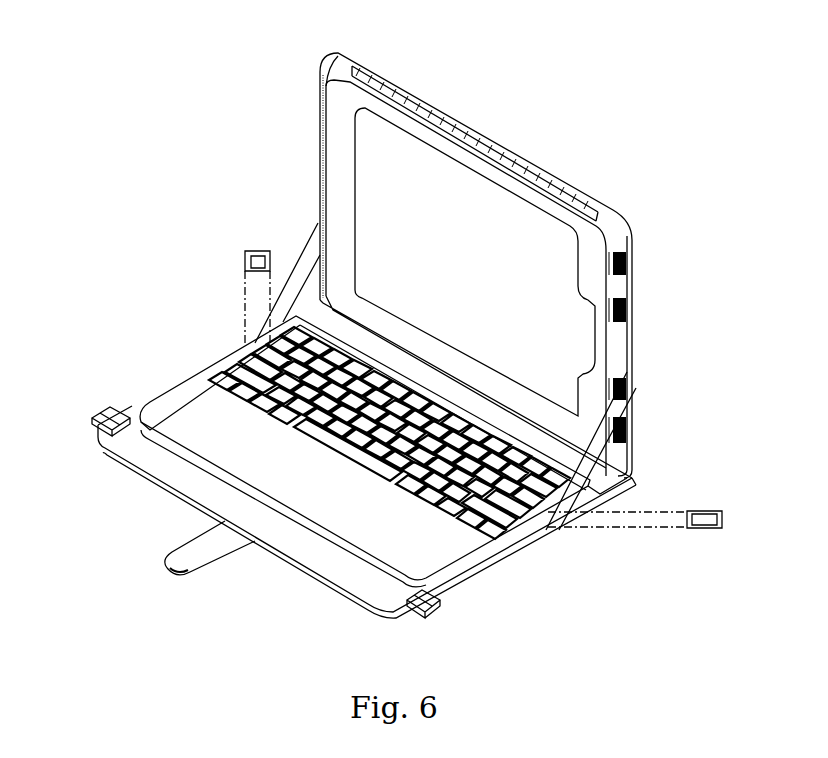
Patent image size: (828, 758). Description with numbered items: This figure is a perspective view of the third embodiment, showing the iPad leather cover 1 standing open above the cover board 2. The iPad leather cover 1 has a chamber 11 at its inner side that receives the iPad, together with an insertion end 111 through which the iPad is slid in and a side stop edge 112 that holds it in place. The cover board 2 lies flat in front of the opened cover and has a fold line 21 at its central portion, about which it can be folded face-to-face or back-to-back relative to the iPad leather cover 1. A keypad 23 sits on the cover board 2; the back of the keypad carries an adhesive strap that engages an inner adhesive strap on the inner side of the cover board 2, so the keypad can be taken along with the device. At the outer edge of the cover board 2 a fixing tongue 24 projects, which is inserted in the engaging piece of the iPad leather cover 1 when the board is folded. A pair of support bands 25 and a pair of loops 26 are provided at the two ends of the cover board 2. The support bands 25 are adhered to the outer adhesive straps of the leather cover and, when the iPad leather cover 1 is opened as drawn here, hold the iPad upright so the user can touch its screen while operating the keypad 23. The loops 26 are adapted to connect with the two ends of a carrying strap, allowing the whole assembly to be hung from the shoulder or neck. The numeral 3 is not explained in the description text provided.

The iPad leather cover 1 is at (427, 122).
The chamber 11 is at (505, 215).
The insertion end 111 is at (333, 80).
The side stop edge 112 is at (325, 178).
The cover board 2 is at (343, 563).
The fold line 21 is at (477, 558).
The keypad 23 is at (190, 405).
The fixing tongue 24 is at (188, 560).
The support band 25 is at (307, 265).
The loop 26 is at (100, 415).
The connecting hinge 3 is at (617, 478).